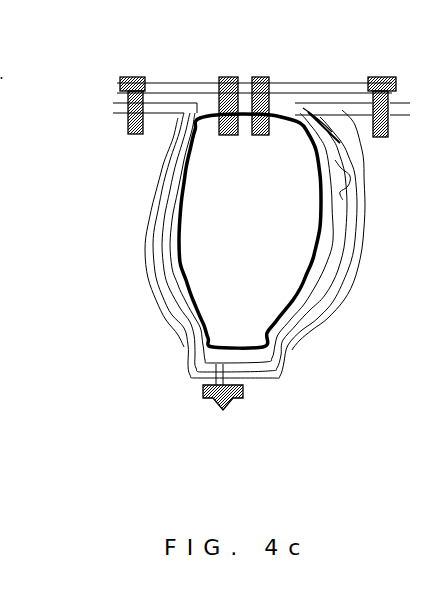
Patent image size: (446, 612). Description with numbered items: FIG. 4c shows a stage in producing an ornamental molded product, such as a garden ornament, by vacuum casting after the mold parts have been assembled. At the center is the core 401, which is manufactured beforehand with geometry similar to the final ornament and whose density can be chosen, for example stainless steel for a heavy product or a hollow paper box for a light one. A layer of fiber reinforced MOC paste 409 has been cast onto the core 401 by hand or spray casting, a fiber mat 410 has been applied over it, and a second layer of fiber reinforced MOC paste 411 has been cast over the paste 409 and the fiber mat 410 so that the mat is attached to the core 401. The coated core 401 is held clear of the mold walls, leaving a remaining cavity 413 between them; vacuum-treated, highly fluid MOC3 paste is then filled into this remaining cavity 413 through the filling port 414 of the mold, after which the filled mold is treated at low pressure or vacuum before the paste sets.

The core 401 is at (202, 232).
The fiber reinforced MOC paste 409 is at (207, 113).
The fiber mat 410 is at (200, 307).
The fiber reinforced MOC paste 411 is at (193, 172).
The remaining cavity 413 is at (323, 258).
The filling port 414 is at (283, 107).